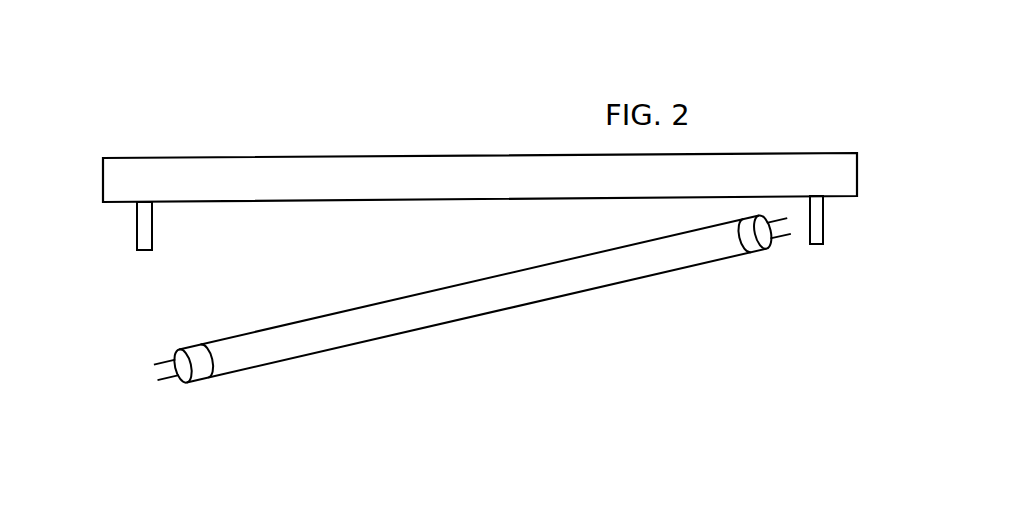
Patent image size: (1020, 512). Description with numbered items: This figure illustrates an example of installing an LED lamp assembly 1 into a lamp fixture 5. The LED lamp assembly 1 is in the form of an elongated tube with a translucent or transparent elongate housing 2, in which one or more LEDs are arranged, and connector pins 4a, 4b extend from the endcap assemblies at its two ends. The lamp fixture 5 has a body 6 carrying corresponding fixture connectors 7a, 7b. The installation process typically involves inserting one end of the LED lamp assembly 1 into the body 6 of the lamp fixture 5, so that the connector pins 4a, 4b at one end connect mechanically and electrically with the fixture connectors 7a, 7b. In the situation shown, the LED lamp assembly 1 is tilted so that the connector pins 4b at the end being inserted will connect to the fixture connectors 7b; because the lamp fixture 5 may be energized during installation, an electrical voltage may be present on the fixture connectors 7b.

The LED lamp assembly 1 is at (463, 390).
The elongate housing 2 is at (510, 309).
The connector pins 4a is at (153, 378).
The connector pins 4b is at (782, 250).
The lamp fixture 5 is at (280, 60).
The body 6 is at (402, 157).
The fixture connectors 7a is at (160, 226).
The fixture connectors 7b is at (804, 230).